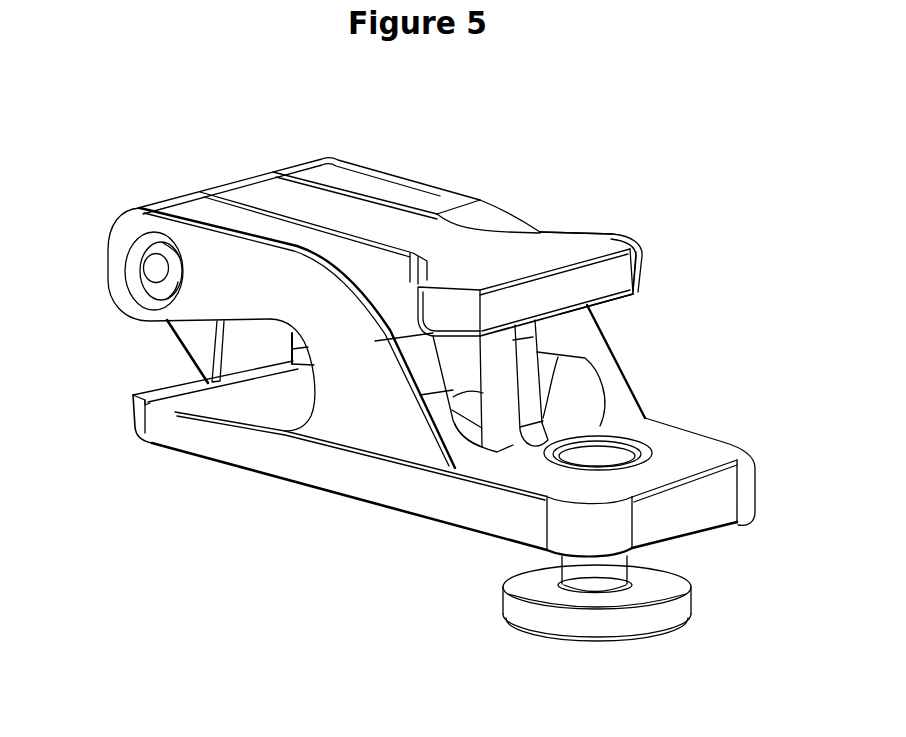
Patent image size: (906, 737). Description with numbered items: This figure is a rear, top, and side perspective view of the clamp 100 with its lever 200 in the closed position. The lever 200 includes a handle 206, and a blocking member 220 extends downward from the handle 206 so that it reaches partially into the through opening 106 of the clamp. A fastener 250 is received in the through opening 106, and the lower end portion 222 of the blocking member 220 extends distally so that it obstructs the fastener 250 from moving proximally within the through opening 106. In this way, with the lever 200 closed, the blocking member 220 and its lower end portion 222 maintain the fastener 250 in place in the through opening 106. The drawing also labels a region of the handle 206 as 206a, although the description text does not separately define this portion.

The clamp 100 is at (96, 143).
The lever 200 is at (465, 242).
The handle 206 is at (612, 240).
The bottom edge of arm end portion 206a is at (620, 303).
The blocking member 220 is at (498, 383).
The lower end portion 222 is at (487, 450).
The through opening 106 is at (633, 446).
The fastener 250 is at (613, 573).